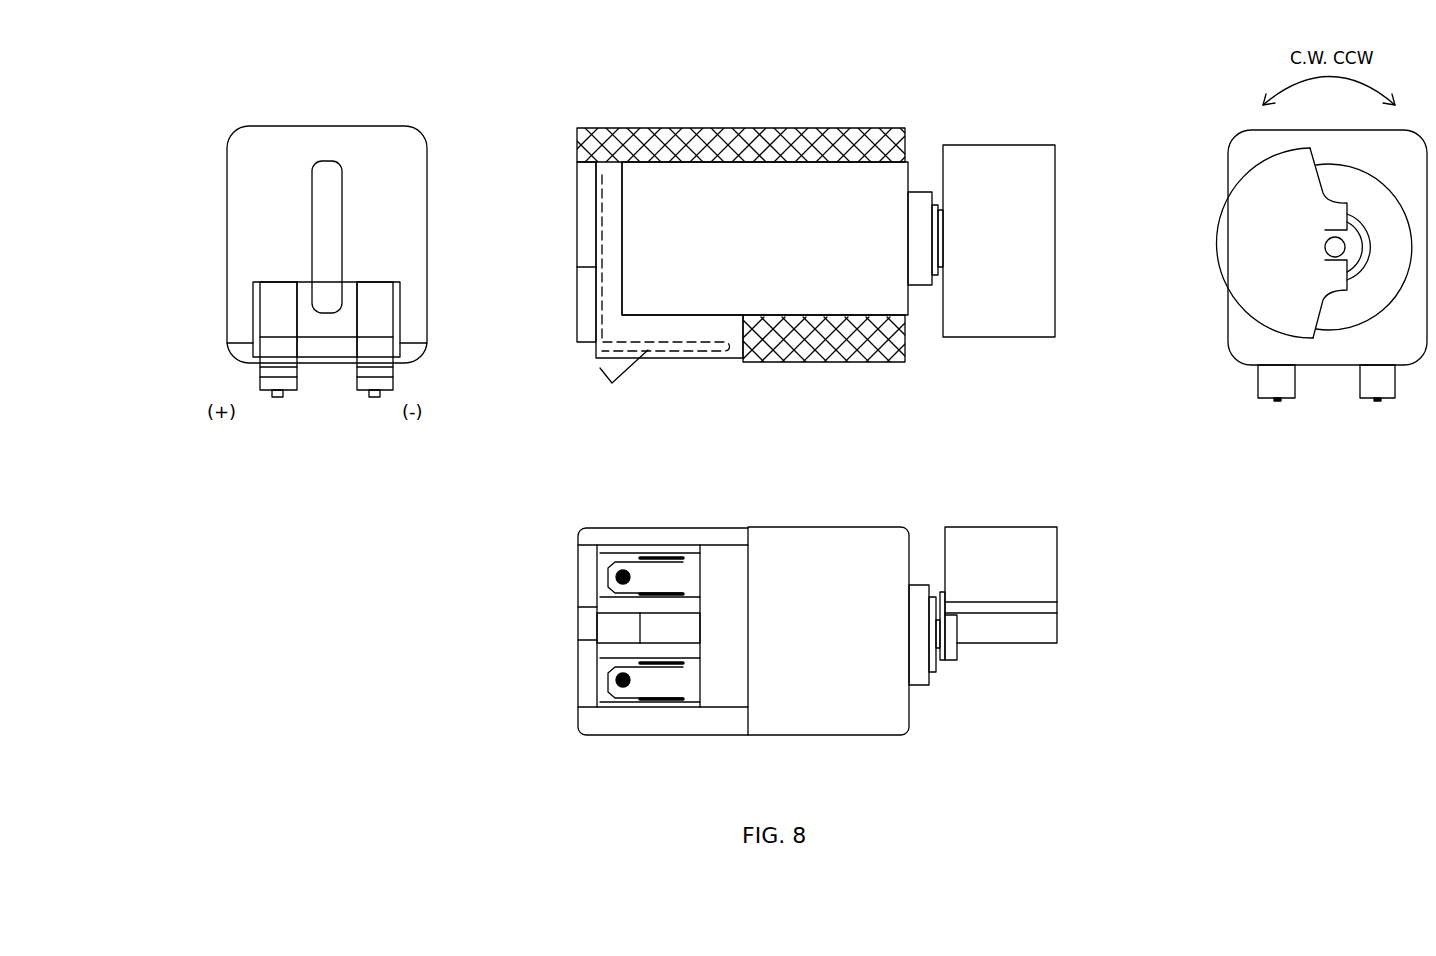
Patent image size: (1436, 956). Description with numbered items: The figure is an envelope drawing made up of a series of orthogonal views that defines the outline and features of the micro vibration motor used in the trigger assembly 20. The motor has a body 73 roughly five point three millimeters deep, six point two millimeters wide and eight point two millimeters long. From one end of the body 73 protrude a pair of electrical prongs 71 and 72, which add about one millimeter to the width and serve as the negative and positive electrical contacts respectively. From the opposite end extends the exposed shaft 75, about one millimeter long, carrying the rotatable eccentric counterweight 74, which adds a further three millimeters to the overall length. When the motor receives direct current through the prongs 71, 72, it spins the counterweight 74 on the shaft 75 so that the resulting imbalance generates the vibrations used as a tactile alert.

The trigger assembly 20 is at (545, 758).
The electrical prong 71 is at (380, 402).
The electrical prong 72 is at (273, 402).
The body 73 is at (822, 525).
The eccentric counterweight 74 is at (667, 573).
The shaft 75 is at (918, 697).